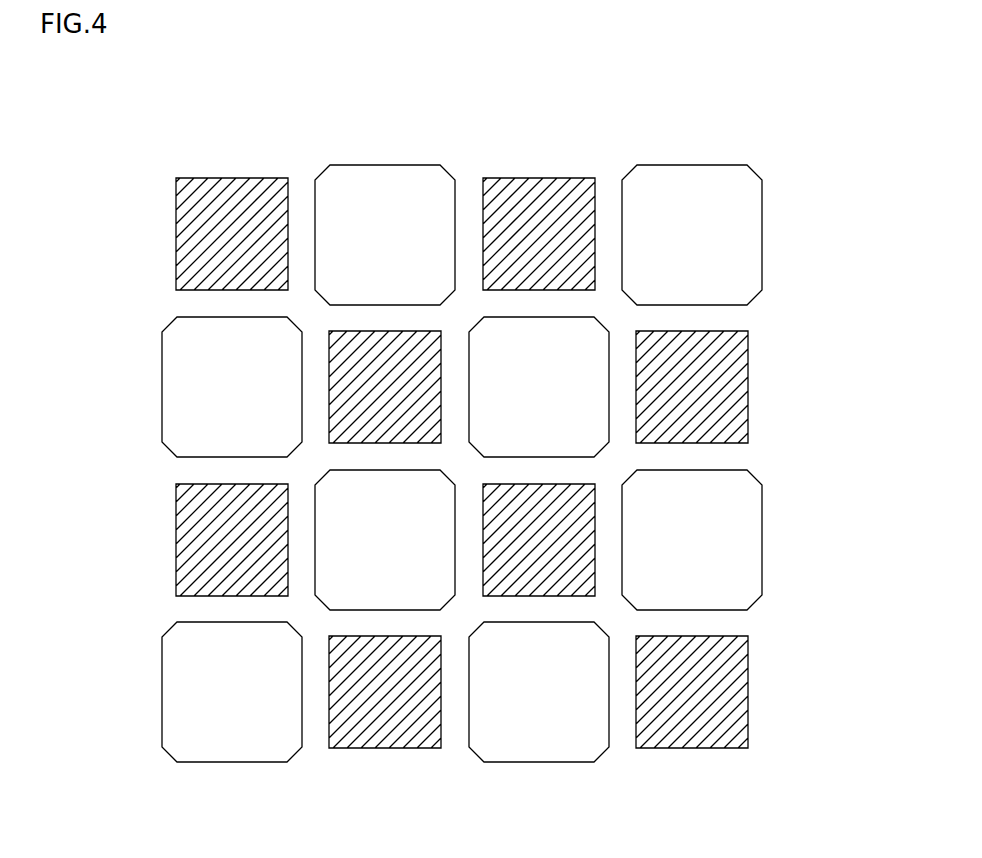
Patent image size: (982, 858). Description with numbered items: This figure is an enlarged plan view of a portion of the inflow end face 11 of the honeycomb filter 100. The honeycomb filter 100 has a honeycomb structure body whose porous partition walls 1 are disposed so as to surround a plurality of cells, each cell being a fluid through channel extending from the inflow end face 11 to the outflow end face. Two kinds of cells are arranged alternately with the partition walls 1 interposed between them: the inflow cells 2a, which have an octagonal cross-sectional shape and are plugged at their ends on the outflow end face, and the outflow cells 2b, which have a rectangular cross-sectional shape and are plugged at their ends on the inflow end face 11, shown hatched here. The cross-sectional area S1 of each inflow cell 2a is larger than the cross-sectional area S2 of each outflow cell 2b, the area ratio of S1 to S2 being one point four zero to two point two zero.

The honeycomb filter 100 is at (778, 87).
The partition walls 1 is at (466, 318).
The inflow end face 11 is at (233, 157).
The inflow cells 2a is at (568, 345).
The outflow cells 2b is at (718, 362).
The cross-sectional area of inflow cell S1 is at (567, 418).
The cross-sectional area of outflow cell S2 is at (695, 392).